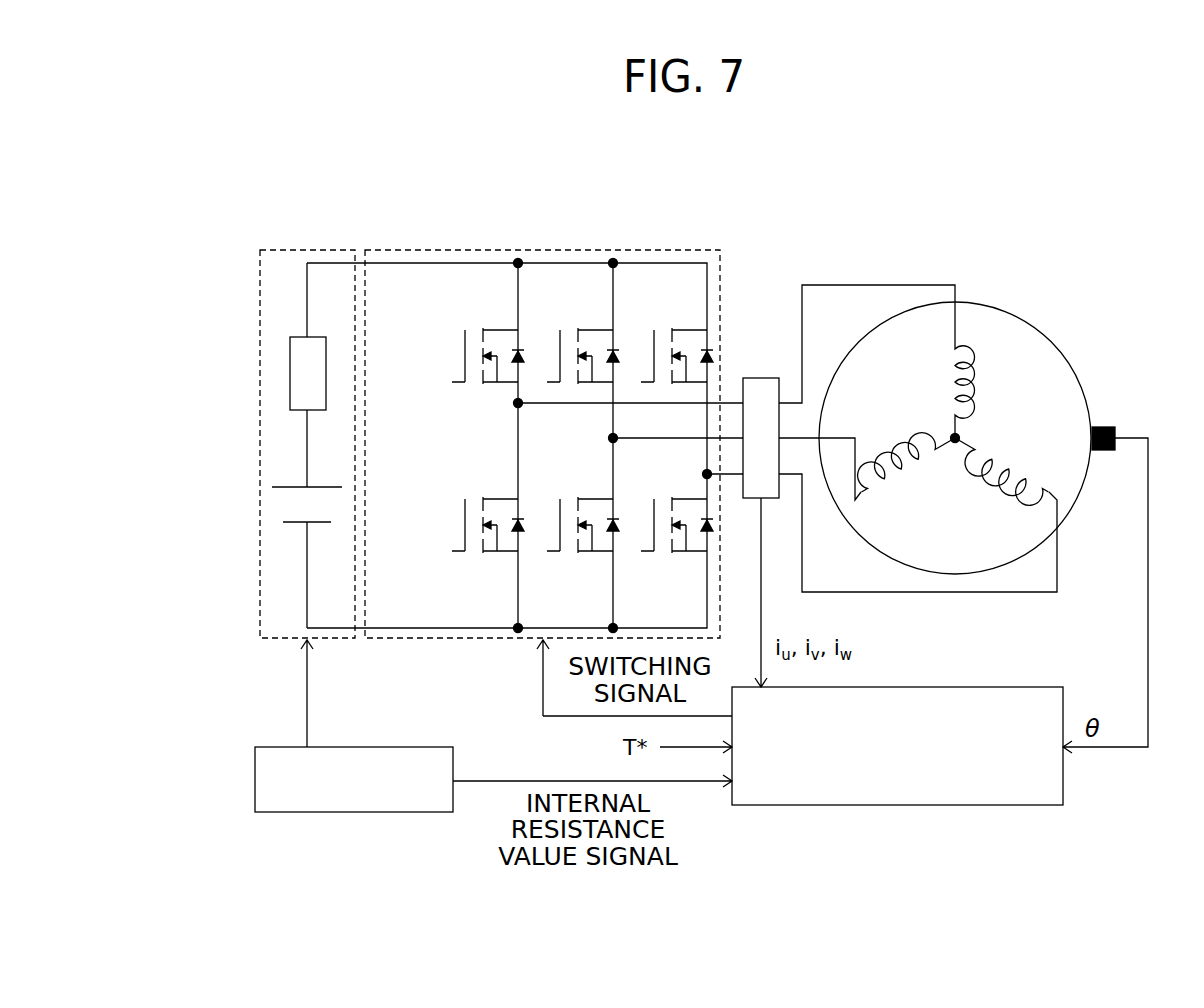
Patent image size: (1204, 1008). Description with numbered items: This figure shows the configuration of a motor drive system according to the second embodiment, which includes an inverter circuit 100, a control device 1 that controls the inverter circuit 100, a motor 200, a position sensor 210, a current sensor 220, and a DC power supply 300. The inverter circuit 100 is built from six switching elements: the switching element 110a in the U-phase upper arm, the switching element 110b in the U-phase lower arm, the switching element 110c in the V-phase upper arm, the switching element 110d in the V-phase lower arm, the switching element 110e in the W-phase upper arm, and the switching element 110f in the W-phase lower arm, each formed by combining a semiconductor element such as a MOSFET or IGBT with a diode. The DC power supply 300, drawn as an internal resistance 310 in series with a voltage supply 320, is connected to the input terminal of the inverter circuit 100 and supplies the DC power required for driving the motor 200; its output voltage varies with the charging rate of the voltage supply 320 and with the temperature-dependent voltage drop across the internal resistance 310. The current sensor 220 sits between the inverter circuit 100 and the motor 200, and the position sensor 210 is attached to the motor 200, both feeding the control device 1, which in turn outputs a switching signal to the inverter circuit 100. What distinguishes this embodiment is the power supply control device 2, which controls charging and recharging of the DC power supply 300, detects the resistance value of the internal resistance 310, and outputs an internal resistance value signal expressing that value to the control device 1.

The DC power supply 300 is at (320, 250).
The inverter circuit 100 is at (472, 250).
The internal resistance 310 is at (290, 337).
The voltage supply 320 is at (290, 487).
The switching element 110a is at (478, 328).
The switching element 110b is at (478, 555).
The switching element 110c is at (573, 328).
The switching element 110d is at (573, 555).
The switching element 110e is at (668, 328).
The switching element 110f is at (668, 555).
The current sensor 220 is at (755, 376).
The motor 200 is at (1040, 318).
The position sensor 210 is at (1100, 415).
The control device 1 is at (1035, 686).
The power supply control device 2 is at (362, 748).